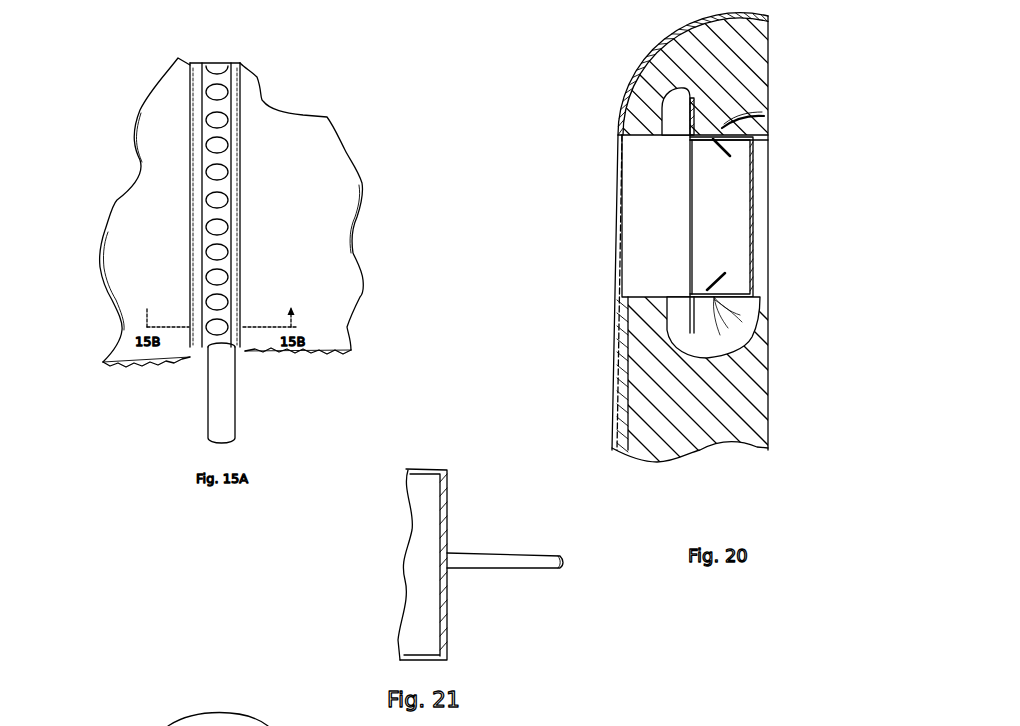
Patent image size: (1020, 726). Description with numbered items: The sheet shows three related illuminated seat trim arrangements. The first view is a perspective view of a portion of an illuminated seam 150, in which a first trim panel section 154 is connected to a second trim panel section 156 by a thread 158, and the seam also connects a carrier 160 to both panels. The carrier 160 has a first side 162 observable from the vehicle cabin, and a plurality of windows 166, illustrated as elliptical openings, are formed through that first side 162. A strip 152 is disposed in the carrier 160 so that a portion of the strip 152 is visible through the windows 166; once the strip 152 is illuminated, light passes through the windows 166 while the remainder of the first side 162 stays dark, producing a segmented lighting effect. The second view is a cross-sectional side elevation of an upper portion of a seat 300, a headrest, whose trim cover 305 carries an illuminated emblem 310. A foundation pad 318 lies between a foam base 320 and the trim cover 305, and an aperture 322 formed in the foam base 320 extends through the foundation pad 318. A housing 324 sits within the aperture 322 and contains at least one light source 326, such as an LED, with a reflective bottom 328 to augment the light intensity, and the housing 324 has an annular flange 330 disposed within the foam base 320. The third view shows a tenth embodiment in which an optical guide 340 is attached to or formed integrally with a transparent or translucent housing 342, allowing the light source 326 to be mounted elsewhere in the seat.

In FIG. 15A, the illuminated seam 150 is at (205, 47).
In FIG. 15A, the strip 152 is at (224, 404).
In FIG. 15A, the first trim panel section 154 is at (335, 243).
In FIG. 15A, the second trim panel section 156 is at (135, 212).
In FIG. 15A, the thread 158 is at (246, 92).
In FIG. 15A, the carrier 160 is at (253, 217).
In FIG. 15A, the first side 162 is at (222, 186).
In FIG. 15A, the windows 166 is at (215, 280).
In FIG. 20, the upper portion of a seat 300 is at (593, 49).
In FIG. 20, the trim cover 305 is at (615, 292).
In FIG. 20, the illuminated emblem 310 is at (603, 222).
In FIG. 20, the foundation pad 318 is at (617, 115).
In FIG. 20, the foam base 320 is at (752, 43).
In FIG. 20, the aperture 322 is at (728, 202).
In FIG. 20, the housing 324 is at (755, 266).
In FIG. 20, the light source 326 is at (719, 148).
In FIG. 20, the reflective bottom 328 is at (749, 243).
In FIG. 20, the flange 330 is at (697, 120).
In FIG. 21, the optical guide 340 is at (495, 553).
In FIG. 21, the housing 342 is at (430, 467).